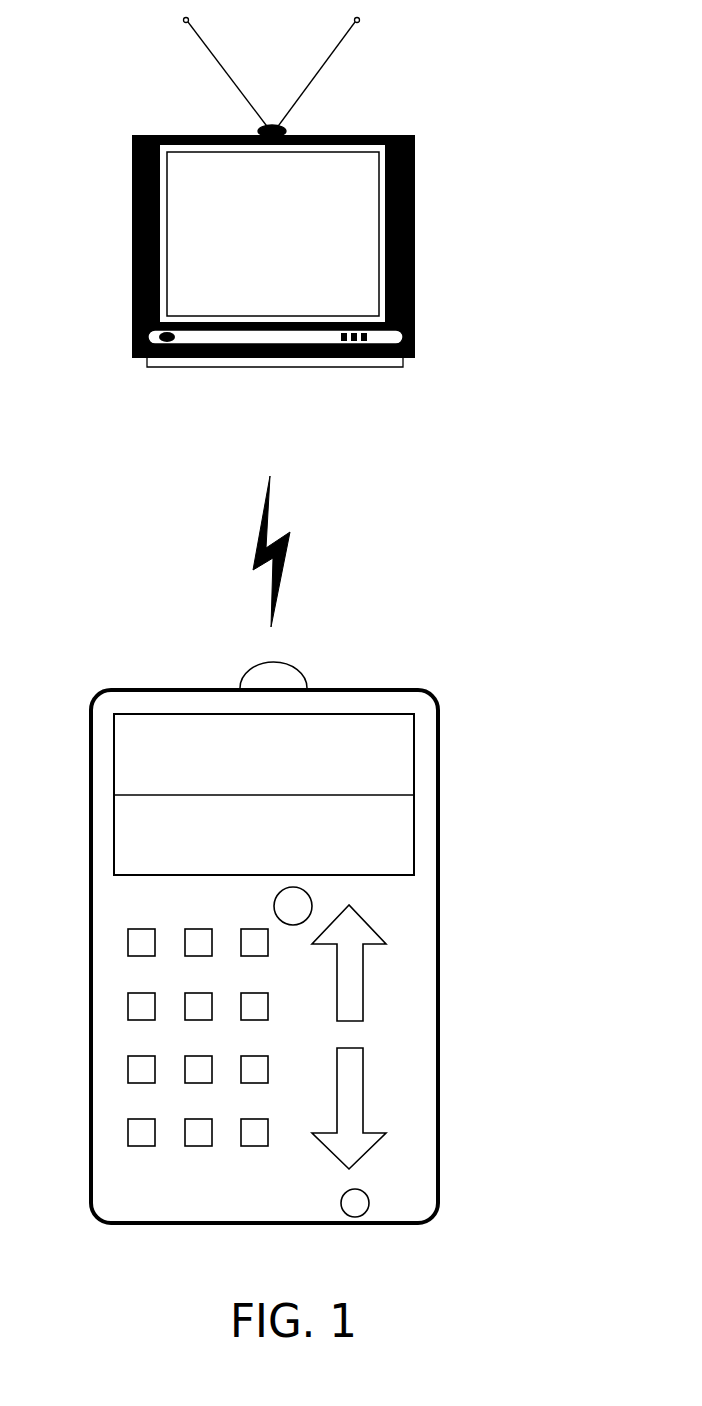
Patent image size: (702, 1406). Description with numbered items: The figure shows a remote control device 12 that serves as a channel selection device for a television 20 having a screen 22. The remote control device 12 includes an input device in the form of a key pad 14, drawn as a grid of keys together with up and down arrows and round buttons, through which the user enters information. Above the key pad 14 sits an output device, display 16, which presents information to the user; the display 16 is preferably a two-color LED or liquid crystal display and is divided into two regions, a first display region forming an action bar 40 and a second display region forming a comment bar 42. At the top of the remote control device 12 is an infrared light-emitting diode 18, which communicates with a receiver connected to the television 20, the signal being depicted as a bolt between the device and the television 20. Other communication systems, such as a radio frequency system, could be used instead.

The remote control device 12 is at (550, 797).
The key pad 14 is at (112, 1018).
The display 16 is at (114, 762).
The infrared light-emitting diode 18 is at (289, 663).
The television 20 is at (415, 213).
The screen 22 is at (286, 247).
The action bar 40 is at (414, 735).
The comment bar 42 is at (415, 815).